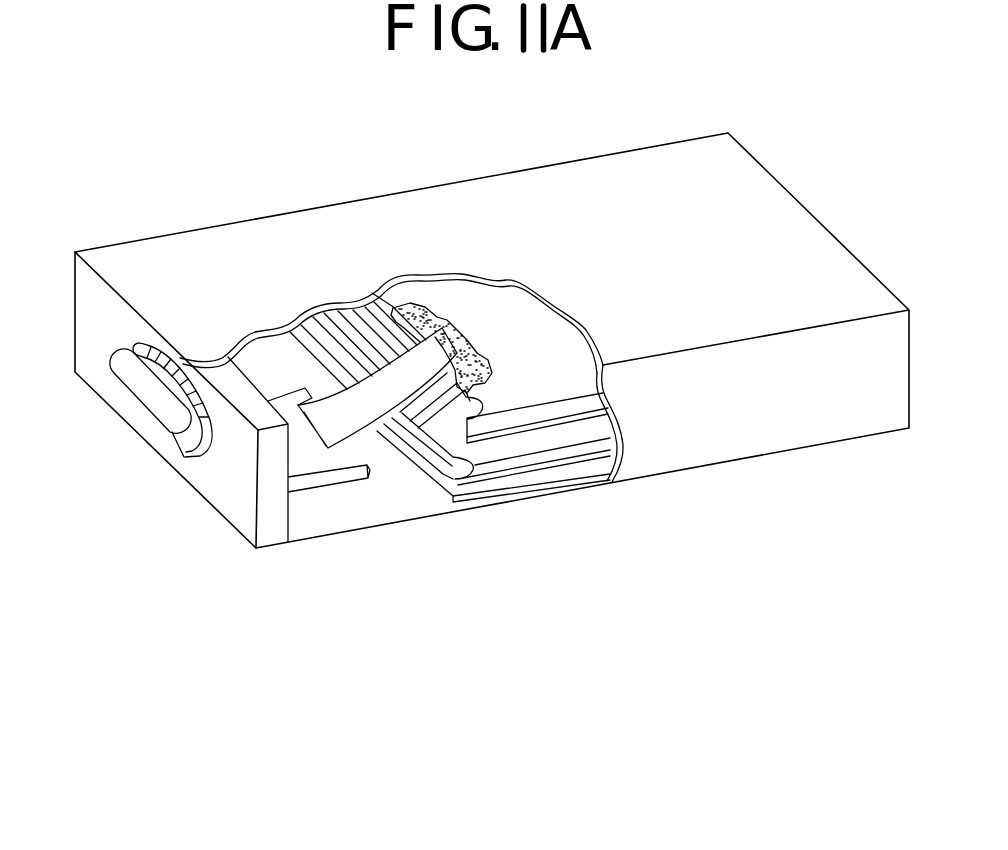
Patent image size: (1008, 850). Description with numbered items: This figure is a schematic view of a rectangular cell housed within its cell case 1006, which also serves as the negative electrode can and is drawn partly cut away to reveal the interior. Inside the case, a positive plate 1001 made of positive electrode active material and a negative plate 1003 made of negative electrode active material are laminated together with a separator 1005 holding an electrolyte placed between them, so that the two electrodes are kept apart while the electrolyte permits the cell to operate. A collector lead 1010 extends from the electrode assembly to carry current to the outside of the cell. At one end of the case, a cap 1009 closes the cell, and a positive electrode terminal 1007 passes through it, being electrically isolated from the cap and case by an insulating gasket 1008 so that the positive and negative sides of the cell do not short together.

The positive plate 1001 is at (440, 310).
The negative plate 1003 is at (503, 487).
The separator 1005 is at (597, 440).
The cell case 1006 is at (604, 80).
The positive electrode terminal 1007 is at (94, 497).
The insulating gasket 1008 is at (168, 543).
The cap 1009 is at (28, 401).
The collector lead 1010 is at (368, 415).